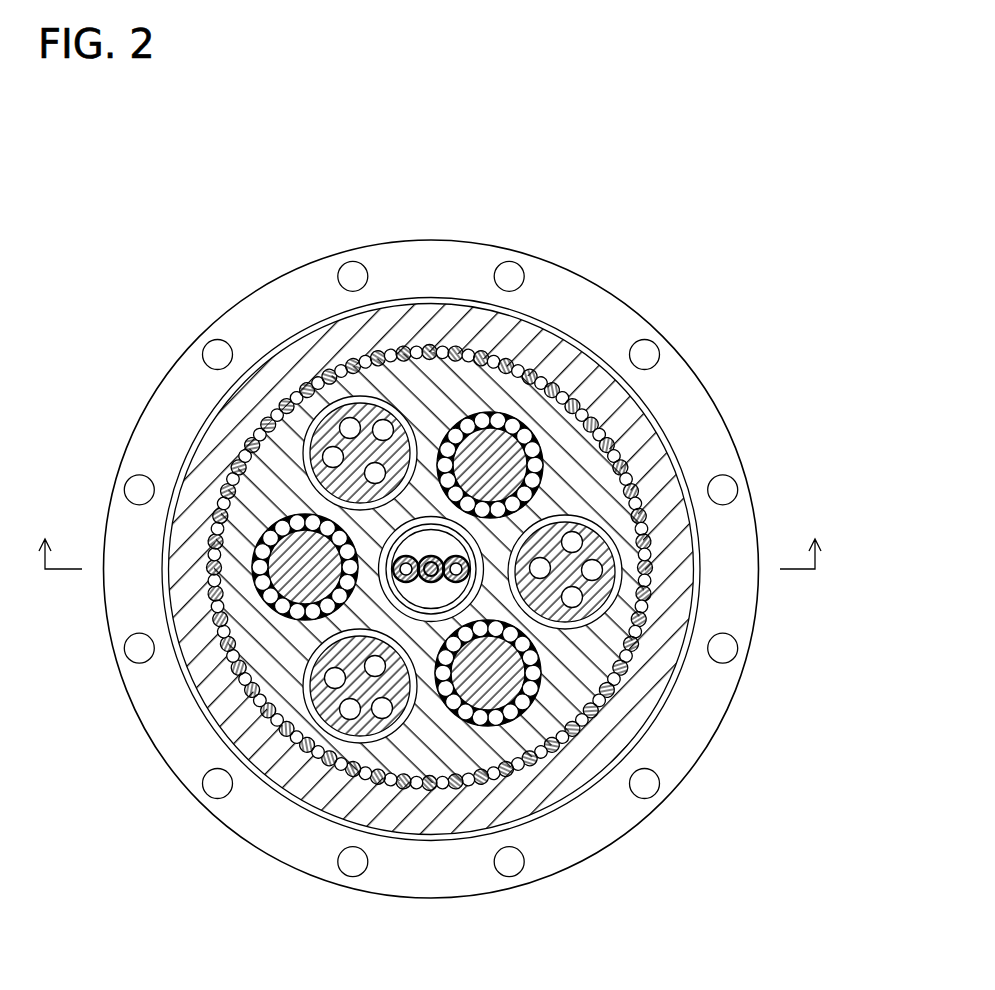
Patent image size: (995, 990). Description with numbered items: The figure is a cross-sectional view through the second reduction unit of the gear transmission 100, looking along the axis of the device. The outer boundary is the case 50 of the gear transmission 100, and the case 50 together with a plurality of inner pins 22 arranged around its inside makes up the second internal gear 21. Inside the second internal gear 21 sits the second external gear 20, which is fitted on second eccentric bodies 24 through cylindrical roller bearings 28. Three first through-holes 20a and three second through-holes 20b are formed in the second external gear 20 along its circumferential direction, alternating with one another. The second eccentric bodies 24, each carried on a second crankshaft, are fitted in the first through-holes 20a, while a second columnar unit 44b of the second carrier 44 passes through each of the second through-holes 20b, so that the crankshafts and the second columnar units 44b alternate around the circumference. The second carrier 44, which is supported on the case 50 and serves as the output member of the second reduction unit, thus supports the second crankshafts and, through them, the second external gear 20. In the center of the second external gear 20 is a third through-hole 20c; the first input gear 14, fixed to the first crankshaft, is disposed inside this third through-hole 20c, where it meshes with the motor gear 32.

The gear transmission 100 is at (639, 158).
The first input gear 14 is at (393, 569).
The second external gear 20 is at (577, 650).
The first through-hole 20a is at (510, 415).
The second through-hole 20b is at (370, 410).
The third through-hole 20c is at (424, 556).
The second internal gear 21 is at (73, 380).
The inner pin 22 is at (252, 445).
The second eccentric body 24 is at (528, 426).
The cylindrical roller bearing 28 is at (505, 455).
The motor gear 32 is at (400, 610).
The second carrier 44 is at (252, 440).
The second columnar unit 44b is at (506, 593).
The case 50 is at (205, 452).